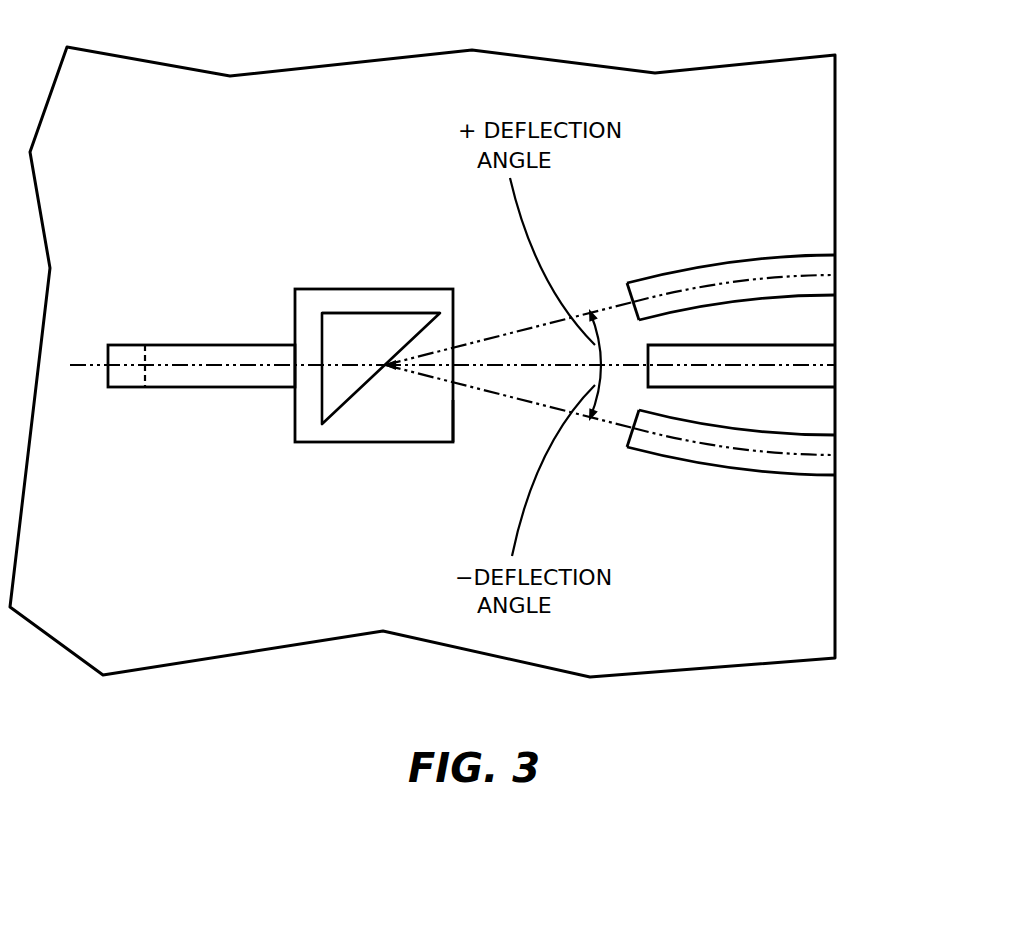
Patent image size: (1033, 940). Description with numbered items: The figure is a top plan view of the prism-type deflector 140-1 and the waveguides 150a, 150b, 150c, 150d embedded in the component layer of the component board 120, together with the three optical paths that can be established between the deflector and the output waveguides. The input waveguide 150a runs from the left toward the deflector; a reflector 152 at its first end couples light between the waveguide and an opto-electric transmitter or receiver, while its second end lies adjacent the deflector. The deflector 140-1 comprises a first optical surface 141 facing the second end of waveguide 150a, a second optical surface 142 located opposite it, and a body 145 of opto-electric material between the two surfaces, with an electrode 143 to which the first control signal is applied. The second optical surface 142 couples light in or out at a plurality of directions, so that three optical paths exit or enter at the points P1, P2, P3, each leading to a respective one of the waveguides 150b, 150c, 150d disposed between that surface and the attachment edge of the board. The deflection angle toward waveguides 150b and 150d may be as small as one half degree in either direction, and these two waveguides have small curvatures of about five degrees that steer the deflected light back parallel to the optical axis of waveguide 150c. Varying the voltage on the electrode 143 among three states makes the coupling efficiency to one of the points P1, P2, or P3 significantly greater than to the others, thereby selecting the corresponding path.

The component board 120 is at (835, 658).
The deflector 140-1 is at (373, 320).
The first optical surface 141 is at (295, 417).
The second optical surface 142 is at (453, 433).
The electrode 143 is at (359, 338).
The body 145 is at (363, 425).
The waveguide 150a is at (192, 331).
The waveguide 150b is at (835, 300).
The waveguide 150c is at (835, 388).
The waveguide 150d is at (835, 478).
The reflector 152 is at (117, 388).
The optical path exit/entry point P1 is at (455, 340).
The optical path exit/entry point P2 is at (512, 365).
The optical path exit/entry point P3 is at (455, 388).